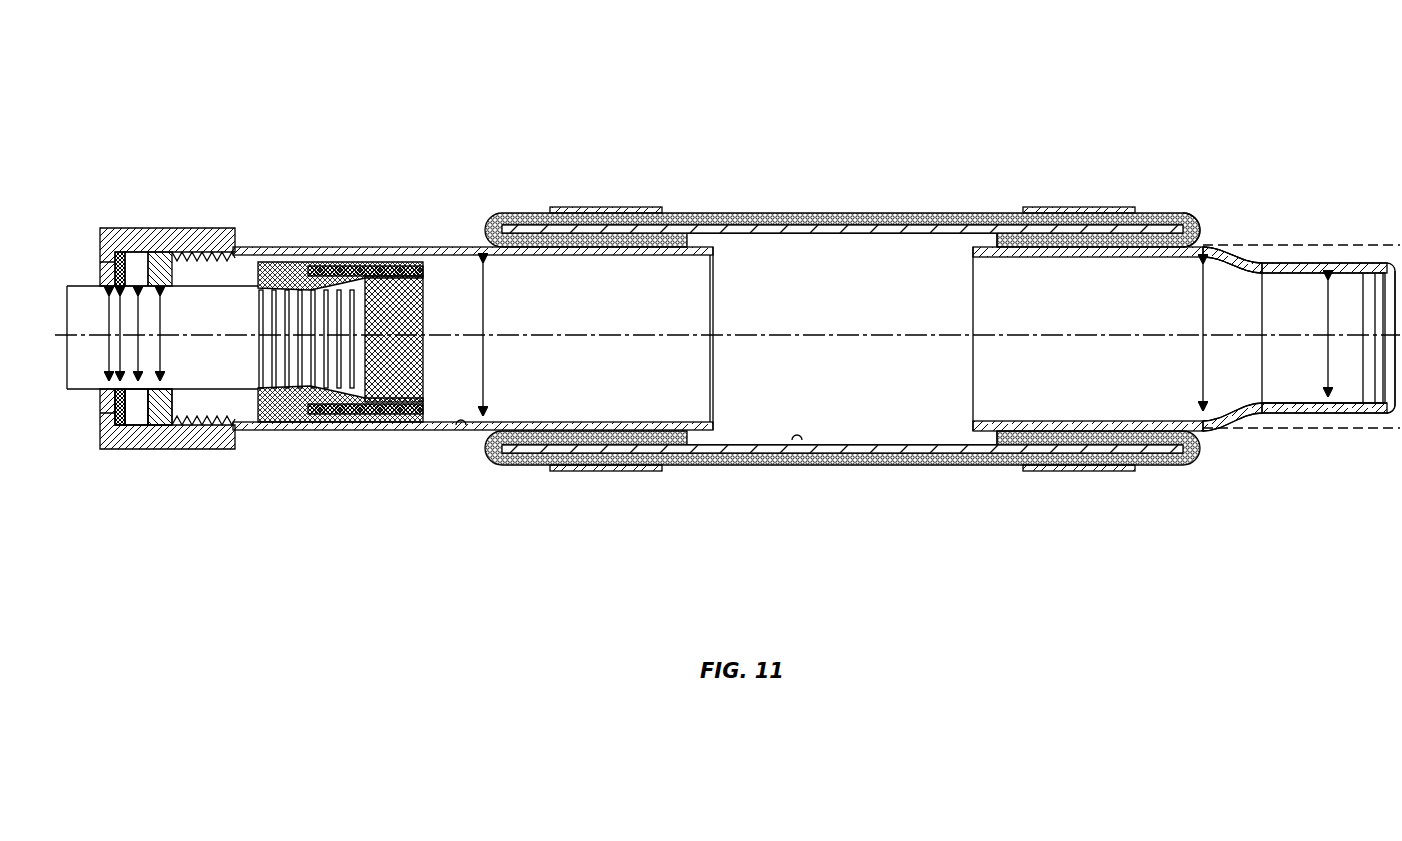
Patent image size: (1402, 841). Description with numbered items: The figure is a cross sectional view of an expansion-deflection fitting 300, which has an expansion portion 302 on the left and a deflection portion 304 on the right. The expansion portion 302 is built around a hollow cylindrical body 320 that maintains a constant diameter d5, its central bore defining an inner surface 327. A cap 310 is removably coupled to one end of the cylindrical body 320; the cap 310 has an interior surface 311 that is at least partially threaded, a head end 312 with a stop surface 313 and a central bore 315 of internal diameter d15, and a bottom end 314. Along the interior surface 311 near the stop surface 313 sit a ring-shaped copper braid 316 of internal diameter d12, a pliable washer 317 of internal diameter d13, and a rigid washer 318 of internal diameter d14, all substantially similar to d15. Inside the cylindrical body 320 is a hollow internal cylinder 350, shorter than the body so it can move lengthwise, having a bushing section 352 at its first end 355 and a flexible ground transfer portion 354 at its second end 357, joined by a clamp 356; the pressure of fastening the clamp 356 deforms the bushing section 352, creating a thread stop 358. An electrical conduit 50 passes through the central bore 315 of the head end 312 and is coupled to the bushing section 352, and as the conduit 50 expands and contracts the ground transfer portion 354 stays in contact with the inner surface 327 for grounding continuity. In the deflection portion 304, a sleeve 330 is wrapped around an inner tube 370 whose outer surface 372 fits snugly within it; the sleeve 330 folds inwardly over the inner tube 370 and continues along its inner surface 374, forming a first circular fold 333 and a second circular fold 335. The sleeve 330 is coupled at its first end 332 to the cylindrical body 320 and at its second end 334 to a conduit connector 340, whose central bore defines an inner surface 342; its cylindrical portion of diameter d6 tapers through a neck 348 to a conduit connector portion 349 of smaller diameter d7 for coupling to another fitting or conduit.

The expansion-deflection fitting 300 is at (978, 126).
The expansion portion 302 is at (397, 226).
The deflection portion 304 is at (1047, 173).
The cap 310 is at (135, 265).
The interior surface 311 is at (160, 255).
The head end 312 is at (100, 236).
The stop surface 313 is at (105, 445).
The bottom end 314 is at (238, 245).
The central bore 315 is at (92, 278).
The ring-shaped copper braid 316 is at (119, 445).
The pliable washer 317 is at (143, 430).
The rigid washer 318 is at (160, 430).
The cylindrical body 320 is at (443, 247).
The inner surface 327 is at (466, 430).
The sleeve 330 is at (800, 212).
The first end 332 is at (506, 215).
The first circular fold 333 is at (542, 236).
The second end 334 is at (1180, 214).
The second circular fold 335 is at (1148, 248).
The conduit connector 340 is at (1292, 263).
The inner surface 342 is at (1320, 402).
The neck 348 is at (1233, 253).
The conduit connector portion 349 is at (1390, 414).
The internal cylinder 350 is at (375, 278).
The bushing section 352 is at (291, 425).
The ground transfer portion 354 is at (415, 425).
The first end 355 is at (258, 430).
The clamp 356 is at (325, 268).
The second end 357 is at (423, 400).
The thread stop 358 is at (326, 423).
The inner tube 370 is at (866, 448).
The outer surface 372 is at (917, 458).
The inner surface 374 is at (797, 442).
The electrical conduit 50 is at (80, 310).
The diameter d5 is at (500, 338).
The diameter d6 is at (1219, 336).
The diameter d7 is at (1311, 337).
The internal diameter d12 is at (105, 425).
The internal diameter d13 is at (163, 408).
The internal diameter d14 is at (172, 337).
The internal diameter d15 is at (107, 368).